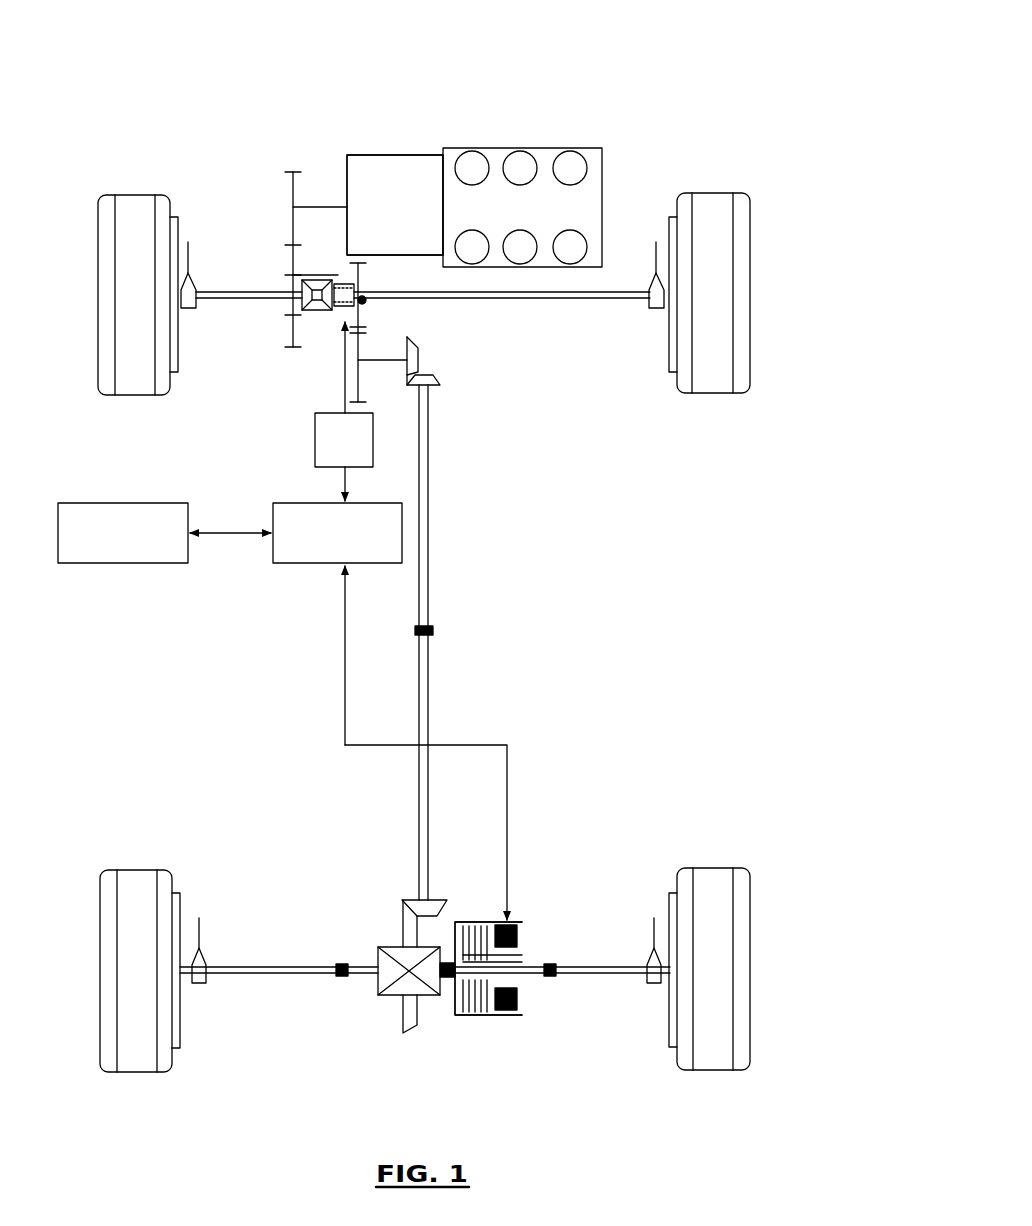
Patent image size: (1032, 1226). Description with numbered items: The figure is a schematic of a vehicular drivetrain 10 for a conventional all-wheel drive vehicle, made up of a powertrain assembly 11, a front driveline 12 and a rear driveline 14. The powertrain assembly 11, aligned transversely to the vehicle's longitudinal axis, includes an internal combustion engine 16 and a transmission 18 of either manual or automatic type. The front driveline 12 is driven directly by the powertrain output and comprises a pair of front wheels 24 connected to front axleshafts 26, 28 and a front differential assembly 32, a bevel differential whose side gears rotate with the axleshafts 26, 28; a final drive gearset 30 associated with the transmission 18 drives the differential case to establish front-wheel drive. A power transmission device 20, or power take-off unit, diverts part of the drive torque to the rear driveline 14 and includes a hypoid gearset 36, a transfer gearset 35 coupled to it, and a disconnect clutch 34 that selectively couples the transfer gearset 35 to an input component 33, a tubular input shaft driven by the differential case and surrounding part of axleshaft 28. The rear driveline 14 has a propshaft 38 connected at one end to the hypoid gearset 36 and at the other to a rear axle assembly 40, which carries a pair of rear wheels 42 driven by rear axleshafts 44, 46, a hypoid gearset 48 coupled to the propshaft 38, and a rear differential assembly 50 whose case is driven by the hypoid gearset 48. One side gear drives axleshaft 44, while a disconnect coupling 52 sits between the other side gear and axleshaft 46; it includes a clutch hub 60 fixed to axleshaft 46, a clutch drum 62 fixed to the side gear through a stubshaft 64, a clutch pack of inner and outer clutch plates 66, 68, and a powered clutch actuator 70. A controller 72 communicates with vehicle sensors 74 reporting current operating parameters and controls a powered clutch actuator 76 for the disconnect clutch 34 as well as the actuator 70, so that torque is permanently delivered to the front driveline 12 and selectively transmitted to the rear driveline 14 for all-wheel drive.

The vehicular drivetrain 10 is at (610, 86).
The powertrain assembly 11 is at (400, 148).
The front driveline 12 is at (266, 367).
The rear driveline 14 is at (291, 823).
The internal combustion engine 16 is at (497, 155).
The transmission 18 is at (360, 157).
The power transmission device 20 is at (453, 358).
The front wheels 24 is at (98, 292).
The front axleshaft 26 is at (237, 290).
The front axleshaft 28 is at (604, 300).
The final drive gearset 30 is at (275, 191).
The front differential assembly 32 is at (326, 318).
The input component 33 is at (321, 280).
The disconnect clutch 34 is at (366, 300).
The transfer gearset 35 is at (390, 380).
The hypoid gearset 36 is at (458, 390).
The propshaft 38 is at (430, 553).
The rear axle assembly 40 is at (329, 984).
The rear wheels 42 is at (100, 970).
The rear axleshaft 44 is at (240, 965).
The rear axleshaft 46 is at (600, 975).
The hypoid gearset 48 is at (400, 895).
The rear differential assembly 50 is at (388, 1002).
The disconnect coupling 52 is at (476, 913).
The clutch hub 60 is at (525, 975).
The clutch drum 62 is at (455, 950).
The stubshaft 64 is at (446, 978).
The inner clutch plates 66 is at (505, 962).
The outer clutch plates 68 is at (495, 955).
The powered clutch actuator 70 is at (500, 1015).
The controller 72 is at (290, 565).
The vehicle sensors 74 is at (120, 565).
The powered clutch actuator 76 is at (315, 438).